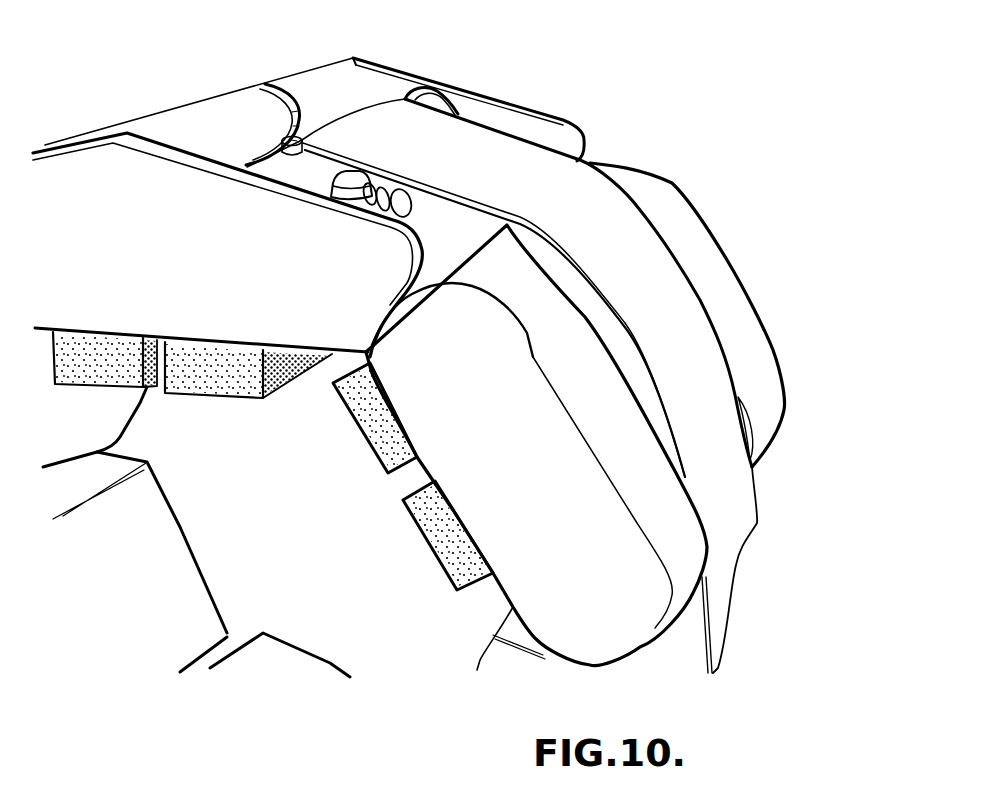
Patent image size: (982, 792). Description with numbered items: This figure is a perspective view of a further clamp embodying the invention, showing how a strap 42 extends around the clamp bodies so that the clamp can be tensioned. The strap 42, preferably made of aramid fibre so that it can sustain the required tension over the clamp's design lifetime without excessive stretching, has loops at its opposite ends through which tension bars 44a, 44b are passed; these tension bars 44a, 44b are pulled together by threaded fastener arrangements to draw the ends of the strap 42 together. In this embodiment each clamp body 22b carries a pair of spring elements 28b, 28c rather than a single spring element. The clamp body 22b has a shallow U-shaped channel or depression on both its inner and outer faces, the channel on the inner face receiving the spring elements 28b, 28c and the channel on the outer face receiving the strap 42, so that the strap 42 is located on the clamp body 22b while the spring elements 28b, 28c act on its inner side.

The tension bar 44a is at (265, 97).
The tension bar 44b is at (424, 98).
The strap 42 is at (548, 187).
The clamp body 22b is at (723, 325).
The spring element 28b is at (383, 425).
The spring element 28c is at (463, 553).